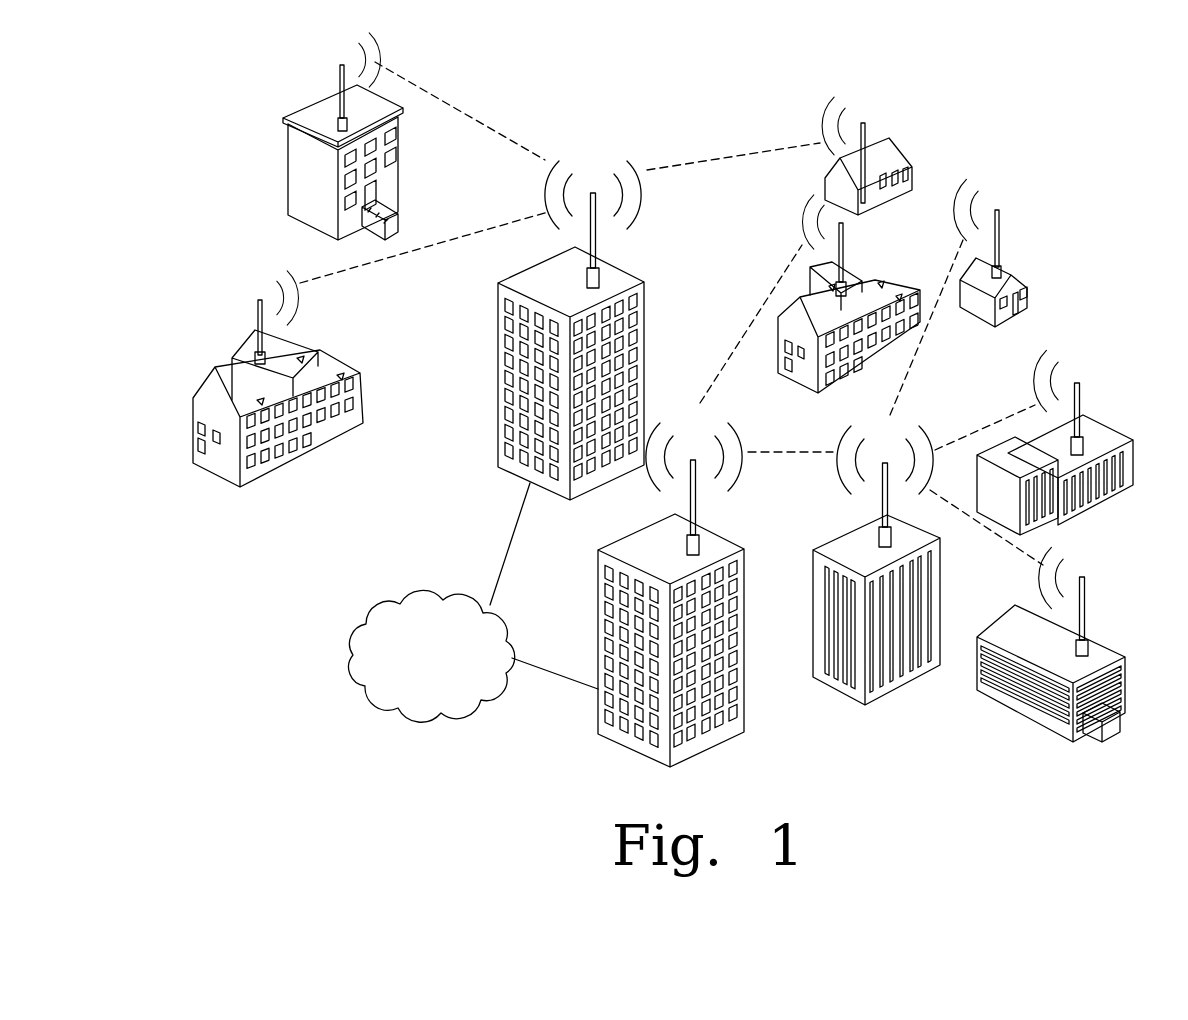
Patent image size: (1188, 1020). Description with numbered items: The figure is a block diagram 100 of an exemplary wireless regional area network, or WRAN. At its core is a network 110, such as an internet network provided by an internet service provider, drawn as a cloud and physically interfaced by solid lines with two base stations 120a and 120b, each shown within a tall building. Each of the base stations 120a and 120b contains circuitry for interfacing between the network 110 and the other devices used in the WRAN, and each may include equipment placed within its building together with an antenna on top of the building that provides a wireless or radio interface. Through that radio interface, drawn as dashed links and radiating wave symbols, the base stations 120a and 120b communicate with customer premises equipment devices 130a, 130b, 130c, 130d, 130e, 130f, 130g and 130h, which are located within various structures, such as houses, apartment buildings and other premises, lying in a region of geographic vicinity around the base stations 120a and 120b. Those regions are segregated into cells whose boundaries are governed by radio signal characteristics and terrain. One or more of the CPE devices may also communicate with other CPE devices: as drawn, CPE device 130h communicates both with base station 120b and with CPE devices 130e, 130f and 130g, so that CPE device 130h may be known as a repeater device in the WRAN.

The block diagram 100 is at (1054, 128).
The network 110 is at (343, 680).
The base station 120a is at (486, 433).
The base station 120b is at (580, 731).
The customer premises equipment (CPE) device 130a is at (202, 378).
The customer premises equipment (CPE) device 130b is at (297, 110).
The customer premises equipment (CPE) device 130c is at (877, 146).
The customer premises equipment (CPE) device 130d is at (885, 257).
The customer premises equipment (CPE) device 130e is at (1004, 268).
The customer premises equipment (CPE) device 130f is at (1098, 424).
The customer premises equipment (CPE) device 130g is at (1096, 644).
The customer premises equipment (CPE) device 130h is at (887, 693).